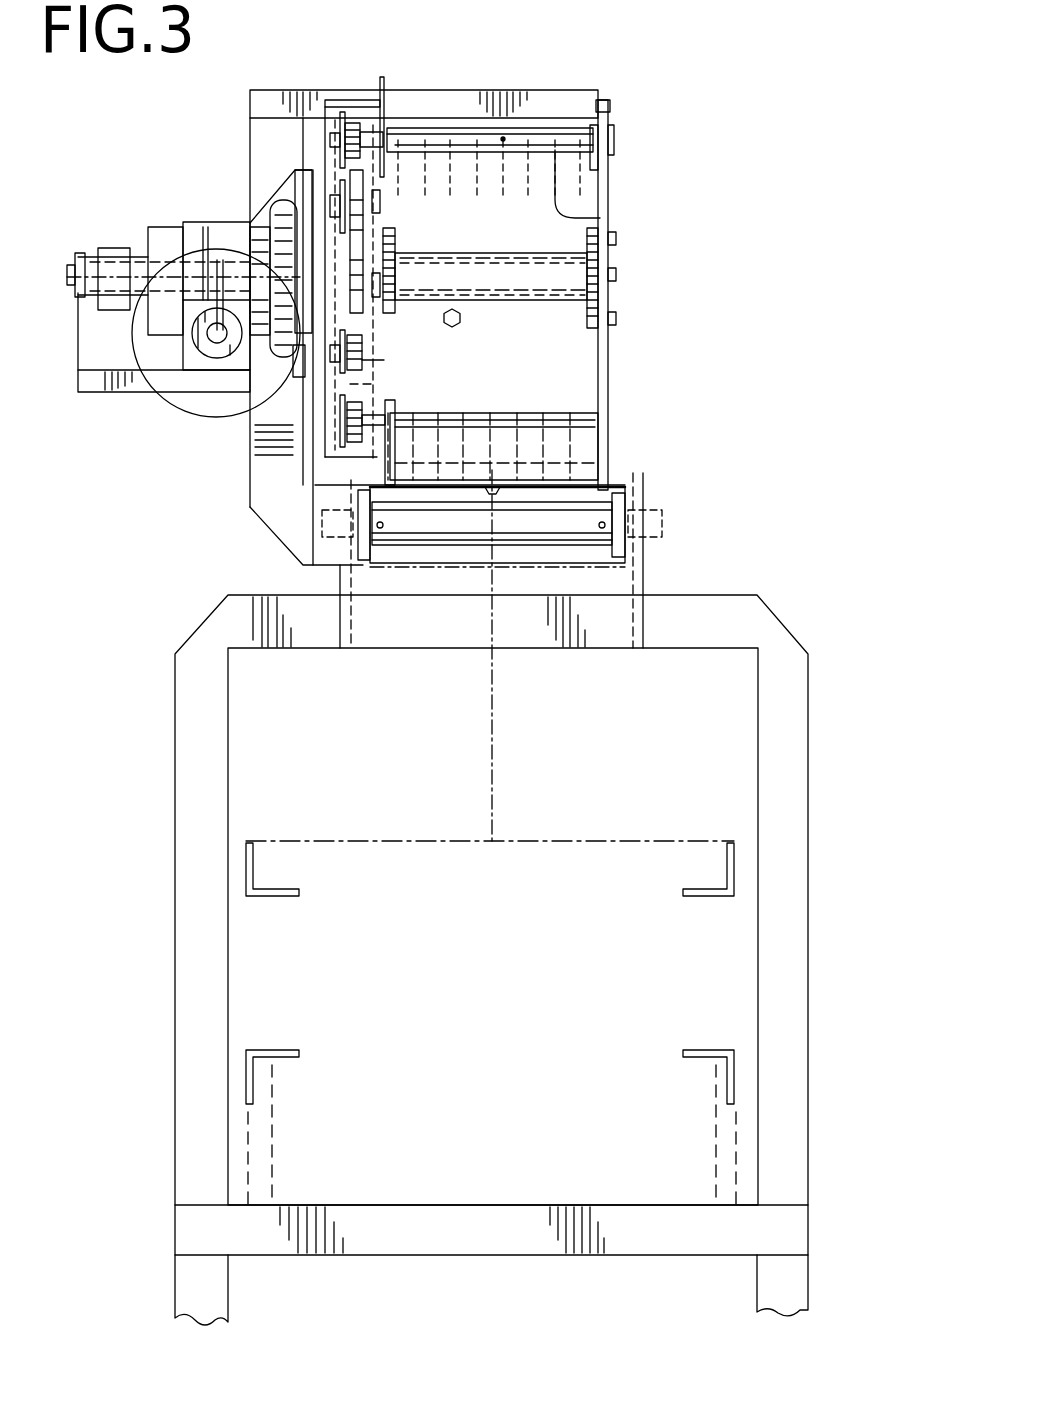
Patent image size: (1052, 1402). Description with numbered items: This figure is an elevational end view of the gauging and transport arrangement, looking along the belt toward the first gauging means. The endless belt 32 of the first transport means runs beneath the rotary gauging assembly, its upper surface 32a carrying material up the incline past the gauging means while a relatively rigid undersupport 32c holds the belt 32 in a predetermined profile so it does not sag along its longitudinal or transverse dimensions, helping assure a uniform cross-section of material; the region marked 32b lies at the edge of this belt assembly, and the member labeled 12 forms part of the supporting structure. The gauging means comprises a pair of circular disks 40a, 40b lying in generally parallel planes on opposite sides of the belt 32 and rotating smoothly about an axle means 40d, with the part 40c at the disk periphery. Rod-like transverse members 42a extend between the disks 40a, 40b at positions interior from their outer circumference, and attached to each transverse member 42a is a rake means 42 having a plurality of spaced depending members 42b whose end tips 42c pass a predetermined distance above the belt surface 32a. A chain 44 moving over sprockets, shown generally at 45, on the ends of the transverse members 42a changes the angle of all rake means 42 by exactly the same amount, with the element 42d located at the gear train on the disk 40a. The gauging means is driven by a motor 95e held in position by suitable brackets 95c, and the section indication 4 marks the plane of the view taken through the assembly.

The frame 12 is at (213, 975).
The endless belt 32 is at (600, 478).
The upper surface of belt 32a is at (614, 496).
The feed roller bracket 32b is at (522, 539).
The rigid undersupport 32c is at (543, 490).
The circular disk 40a is at (384, 360).
The circular disk 40b is at (605, 358).
The roller gear flange 40c is at (612, 318).
The axle means 40d is at (570, 273).
The rake means 42 is at (592, 181).
The transverse members 42a is at (548, 135).
The depending members 42b is at (596, 146).
The end tip 42c is at (600, 218).
The drive gear 42d is at (351, 122).
The chain 44 is at (383, 388).
The gear 45 is at (355, 348).
The brackets 95c is at (213, 394).
The motor 95e is at (217, 233).
The section line 4- 4 is at (333, 90).